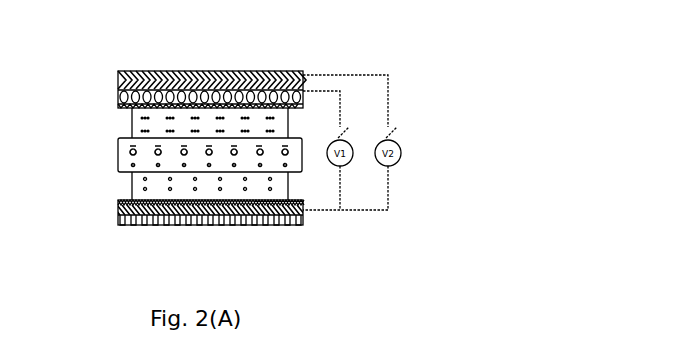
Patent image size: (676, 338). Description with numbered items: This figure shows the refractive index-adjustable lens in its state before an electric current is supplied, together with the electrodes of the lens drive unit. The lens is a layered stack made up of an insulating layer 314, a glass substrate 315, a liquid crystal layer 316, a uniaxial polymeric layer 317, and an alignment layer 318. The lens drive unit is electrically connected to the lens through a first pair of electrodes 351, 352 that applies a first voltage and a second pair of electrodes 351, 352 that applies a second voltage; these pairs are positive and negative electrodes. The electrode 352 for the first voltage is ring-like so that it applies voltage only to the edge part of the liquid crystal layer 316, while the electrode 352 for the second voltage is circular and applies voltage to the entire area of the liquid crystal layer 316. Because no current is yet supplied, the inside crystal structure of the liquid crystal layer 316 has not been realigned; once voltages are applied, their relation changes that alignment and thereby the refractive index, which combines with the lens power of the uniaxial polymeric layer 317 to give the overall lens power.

The insulating layer 314 is at (117, 75).
The glass substrate 315 is at (117, 98).
The liquid crystal layer 316 is at (131, 125).
The uniaxial polymeric layer 317 is at (117, 160).
The alignment layer 318 is at (117, 107).
The electrode 351 is at (118, 212).
The electrode 352 is at (125, 72).